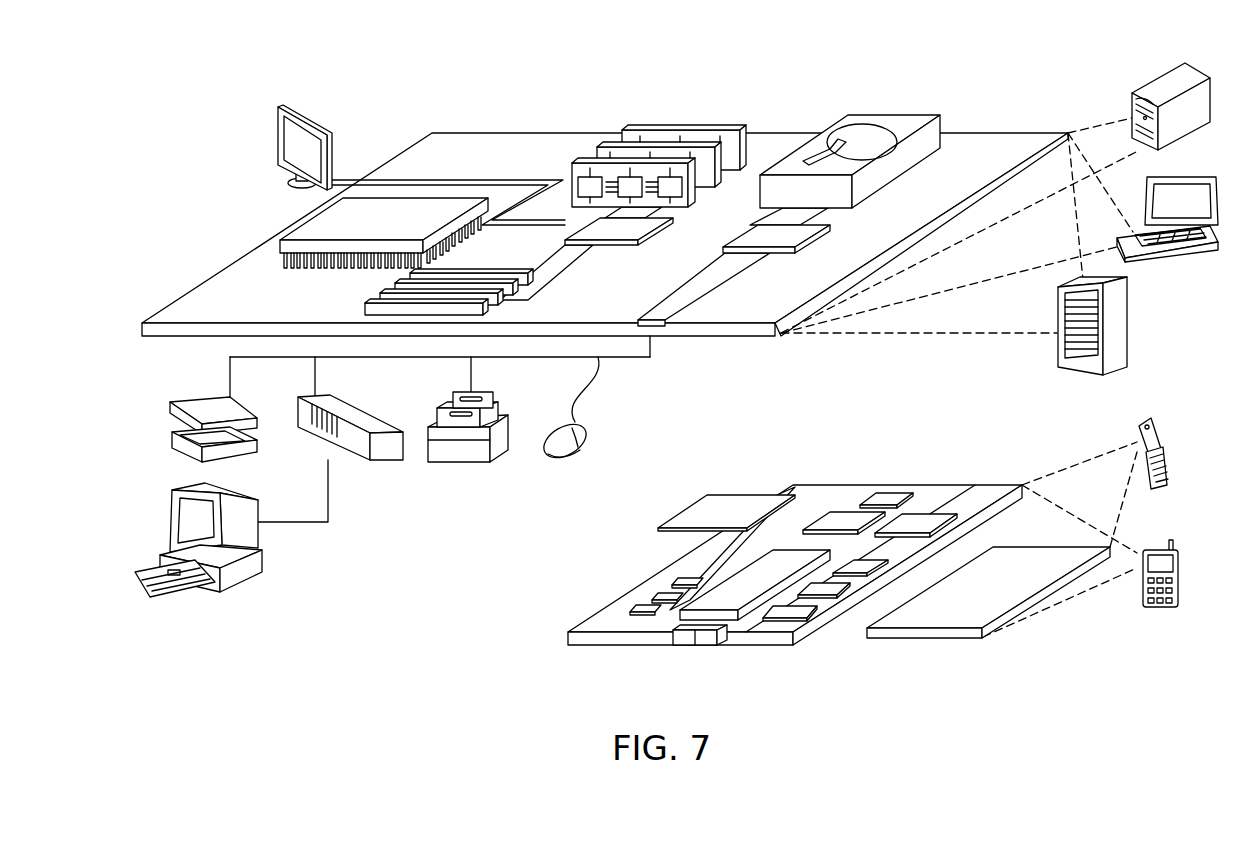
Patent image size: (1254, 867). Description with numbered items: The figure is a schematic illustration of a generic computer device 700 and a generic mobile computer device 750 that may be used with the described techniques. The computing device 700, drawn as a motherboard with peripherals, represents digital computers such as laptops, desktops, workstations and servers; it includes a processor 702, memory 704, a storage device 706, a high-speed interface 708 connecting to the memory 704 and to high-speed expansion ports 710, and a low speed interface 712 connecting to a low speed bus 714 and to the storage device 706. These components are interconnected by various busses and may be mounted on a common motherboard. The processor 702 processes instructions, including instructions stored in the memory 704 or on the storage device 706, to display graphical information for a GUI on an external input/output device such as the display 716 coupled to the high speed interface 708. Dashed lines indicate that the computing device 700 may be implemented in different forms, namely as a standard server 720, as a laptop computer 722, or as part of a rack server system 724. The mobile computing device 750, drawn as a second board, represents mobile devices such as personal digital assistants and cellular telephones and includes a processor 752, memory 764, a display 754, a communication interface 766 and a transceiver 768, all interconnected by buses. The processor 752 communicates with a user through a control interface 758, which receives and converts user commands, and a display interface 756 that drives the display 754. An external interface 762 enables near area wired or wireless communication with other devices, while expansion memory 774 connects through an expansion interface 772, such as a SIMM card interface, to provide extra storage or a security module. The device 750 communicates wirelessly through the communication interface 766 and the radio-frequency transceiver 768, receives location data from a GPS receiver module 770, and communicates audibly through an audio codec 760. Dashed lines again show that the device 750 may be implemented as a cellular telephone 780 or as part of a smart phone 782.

The generic computer device 700 is at (637, 326).
The processor 702 is at (303, 223).
The memory 704 is at (687, 128).
The storage device 706 is at (887, 113).
The high-speed interface 708 is at (631, 242).
The high-speed expansion ports 710 is at (388, 294).
The low speed interface 712 is at (755, 233).
The low speed bus 714 is at (655, 313).
The display 716 is at (280, 106).
The standard server 720 is at (1149, 88).
The laptop computer 722 is at (1197, 173).
The rack server system 724 is at (1130, 330).
The generic mobile computer device 750 is at (825, 541).
The processor 752 is at (728, 590).
The display 754 is at (1020, 560).
The display interface 756 is at (806, 620).
The control interface 758 is at (826, 589).
The audio codec 760 is at (864, 565).
The external interface 762 is at (697, 636).
The memory 764 is at (660, 599).
The communication interface 766 is at (841, 514).
The transceiver 768 is at (922, 516).
The GPS receiver module 770 is at (890, 494).
The expansion interface 772 is at (778, 494).
The expansion memory 774 is at (707, 495).
The cellular telephone 780 is at (1145, 421).
The smart phone 782 is at (1157, 549).